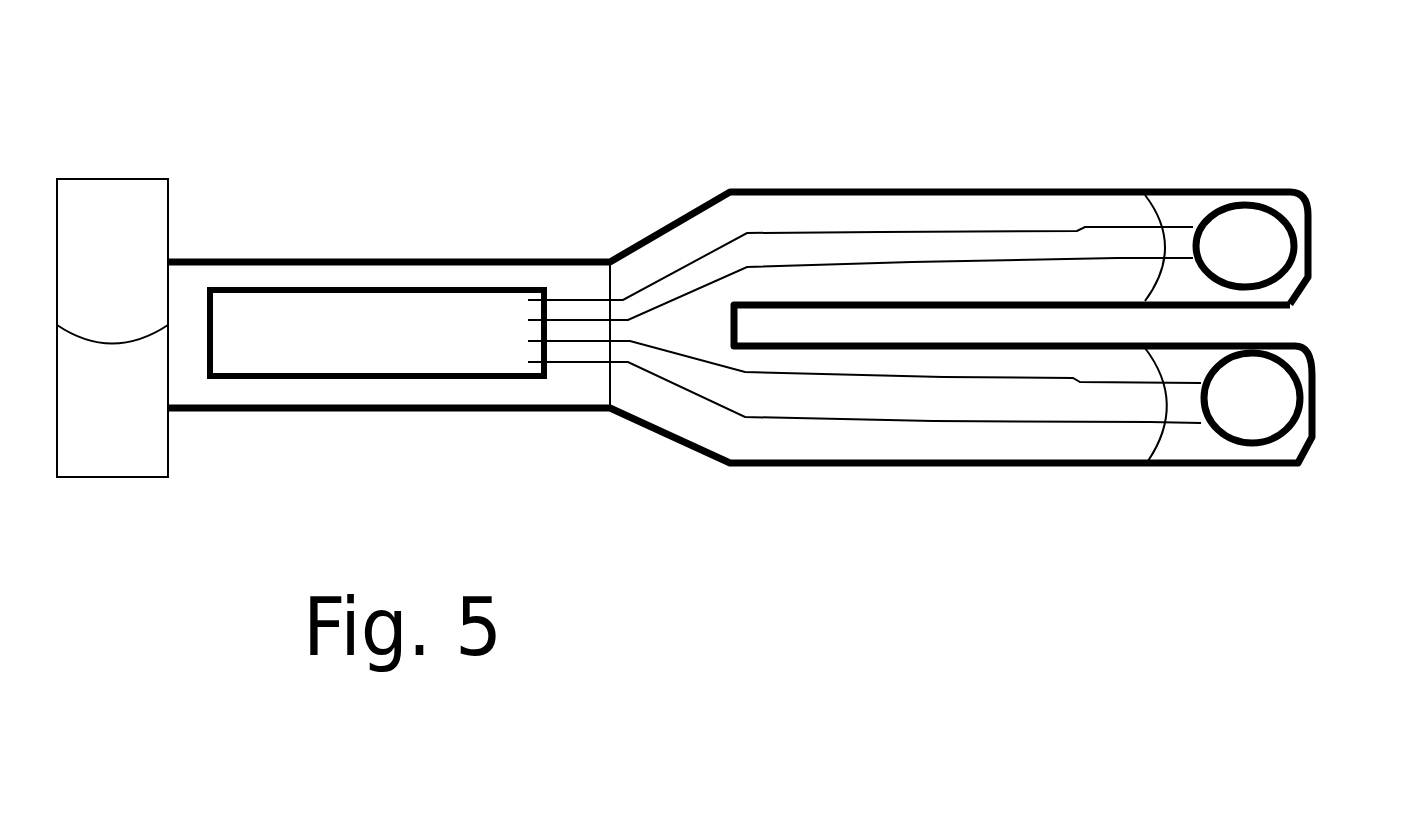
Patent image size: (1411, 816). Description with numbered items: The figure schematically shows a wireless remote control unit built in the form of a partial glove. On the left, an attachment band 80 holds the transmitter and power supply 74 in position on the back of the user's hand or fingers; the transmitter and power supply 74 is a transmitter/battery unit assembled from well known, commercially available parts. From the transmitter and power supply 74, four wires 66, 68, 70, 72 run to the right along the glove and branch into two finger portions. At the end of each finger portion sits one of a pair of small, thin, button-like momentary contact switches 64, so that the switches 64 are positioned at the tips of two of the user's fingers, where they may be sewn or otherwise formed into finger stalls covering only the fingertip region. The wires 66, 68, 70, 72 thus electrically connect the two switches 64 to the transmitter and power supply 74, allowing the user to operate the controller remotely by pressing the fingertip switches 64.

The momentary contact switches 64 is at (1258, 402).
The wire 66 is at (878, 232).
The wire 68 is at (912, 262).
The wire 70 is at (933, 422).
The wire 72 is at (943, 377).
The transmitter and power supply 74 is at (415, 333).
The attachment band 80 is at (110, 250).